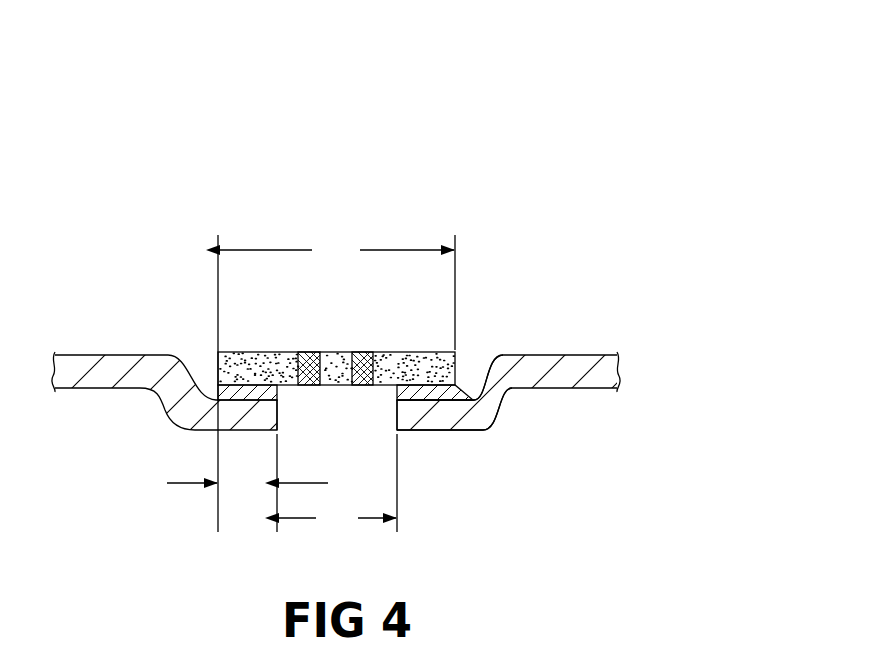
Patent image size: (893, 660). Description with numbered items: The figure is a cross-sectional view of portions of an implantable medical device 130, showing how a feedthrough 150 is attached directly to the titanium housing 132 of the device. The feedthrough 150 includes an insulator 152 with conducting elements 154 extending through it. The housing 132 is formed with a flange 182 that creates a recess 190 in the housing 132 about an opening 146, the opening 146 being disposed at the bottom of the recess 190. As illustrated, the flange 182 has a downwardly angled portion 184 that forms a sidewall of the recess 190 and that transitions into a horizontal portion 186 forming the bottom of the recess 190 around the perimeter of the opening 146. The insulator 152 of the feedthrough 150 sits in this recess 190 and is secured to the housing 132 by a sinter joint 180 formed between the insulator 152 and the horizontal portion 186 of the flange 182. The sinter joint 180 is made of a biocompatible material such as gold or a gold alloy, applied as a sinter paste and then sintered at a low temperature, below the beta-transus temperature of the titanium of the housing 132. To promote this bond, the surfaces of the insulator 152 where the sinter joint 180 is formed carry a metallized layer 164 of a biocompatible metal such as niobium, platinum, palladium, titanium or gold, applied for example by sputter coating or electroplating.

The implantable medical device 130 is at (543, 91).
The housing 132 is at (558, 356).
The opening 146 is at (338, 418).
The feedthrough 150 is at (403, 207).
The insulator 152 is at (255, 362).
The conducting elements 154 is at (308, 362).
The metallized layer 164 is at (211, 360).
The sinter joint 180 is at (220, 390).
The flange 182 is at (484, 446).
The downwardly angled portion 184 is at (499, 399).
The horizontal portion 186 is at (432, 432).
The recess 190 is at (470, 362).